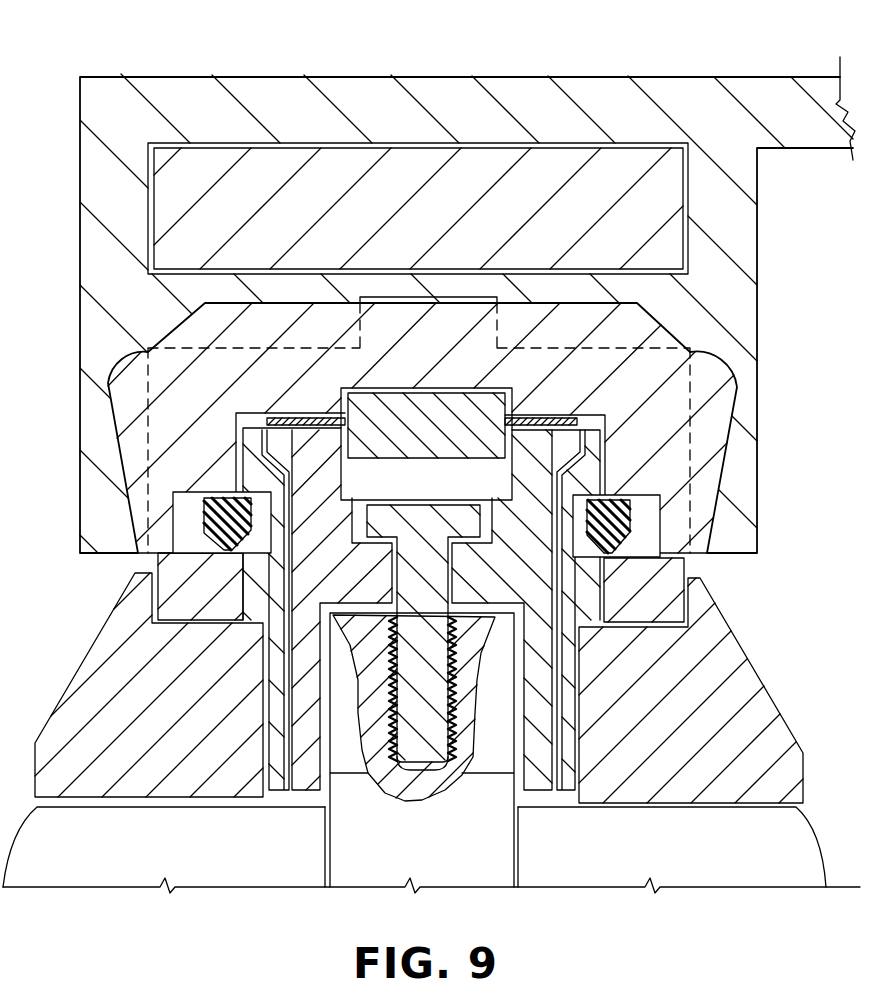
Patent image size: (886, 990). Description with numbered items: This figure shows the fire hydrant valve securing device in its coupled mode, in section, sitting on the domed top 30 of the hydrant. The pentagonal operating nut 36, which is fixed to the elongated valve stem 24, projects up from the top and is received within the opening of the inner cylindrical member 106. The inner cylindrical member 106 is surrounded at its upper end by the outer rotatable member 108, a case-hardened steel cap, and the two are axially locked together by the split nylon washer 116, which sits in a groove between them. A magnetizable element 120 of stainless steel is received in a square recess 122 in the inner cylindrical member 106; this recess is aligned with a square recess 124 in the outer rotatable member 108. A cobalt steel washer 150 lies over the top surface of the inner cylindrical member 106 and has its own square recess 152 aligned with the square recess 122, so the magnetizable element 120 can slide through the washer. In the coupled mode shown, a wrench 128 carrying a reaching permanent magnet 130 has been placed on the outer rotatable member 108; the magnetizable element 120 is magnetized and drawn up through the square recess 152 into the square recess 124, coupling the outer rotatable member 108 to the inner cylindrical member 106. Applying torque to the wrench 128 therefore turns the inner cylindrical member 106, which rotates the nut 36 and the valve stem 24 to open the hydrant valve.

The wrench 128 is at (655, 75).
The permanent magnet 130 is at (437, 232).
The square recess 124 is at (413, 388).
The square recess 122 is at (405, 491).
The magnetizable element 120 is at (430, 440).
The square recess 152 is at (330, 418).
The cobalt steel washer 150 is at (558, 418).
The outer rotatable member 108 is at (131, 391).
The split nylon washer 116 is at (205, 515).
The inner cylindrical member 106 is at (362, 582).
The operating nut 36 is at (495, 760).
The valve stem 24 is at (490, 862).
The domed top 30 is at (790, 858).